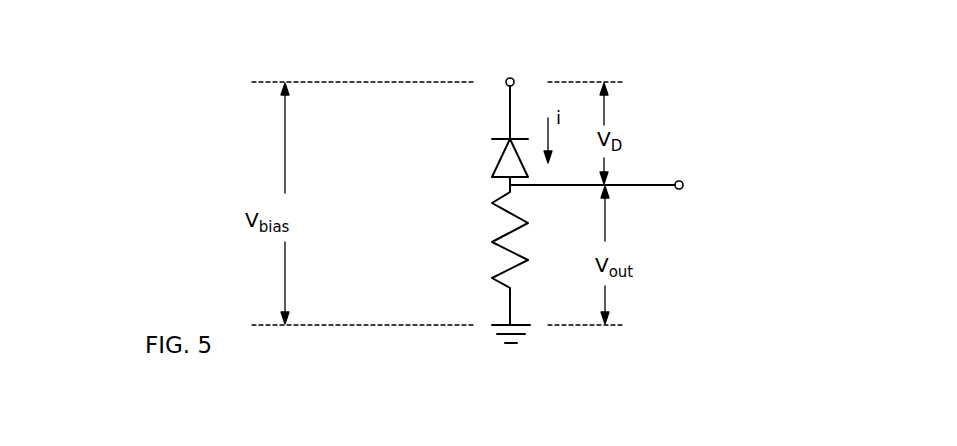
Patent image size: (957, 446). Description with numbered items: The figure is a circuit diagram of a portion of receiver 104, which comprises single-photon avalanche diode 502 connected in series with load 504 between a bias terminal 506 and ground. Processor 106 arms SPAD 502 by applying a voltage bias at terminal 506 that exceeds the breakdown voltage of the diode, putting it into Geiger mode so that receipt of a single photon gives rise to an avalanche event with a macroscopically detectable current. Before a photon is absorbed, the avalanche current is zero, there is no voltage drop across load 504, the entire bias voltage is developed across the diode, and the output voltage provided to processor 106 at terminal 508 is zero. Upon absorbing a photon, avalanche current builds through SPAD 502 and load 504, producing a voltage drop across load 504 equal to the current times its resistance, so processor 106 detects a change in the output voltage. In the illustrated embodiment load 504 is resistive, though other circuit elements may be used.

The receiver 104 is at (196, 78).
The single-photon avalanche diode 502 is at (493, 167).
The load 504 is at (492, 245).
The terminal 506 is at (507, 85).
The terminal 508 is at (681, 181).
The processor 106 is at (748, 213).